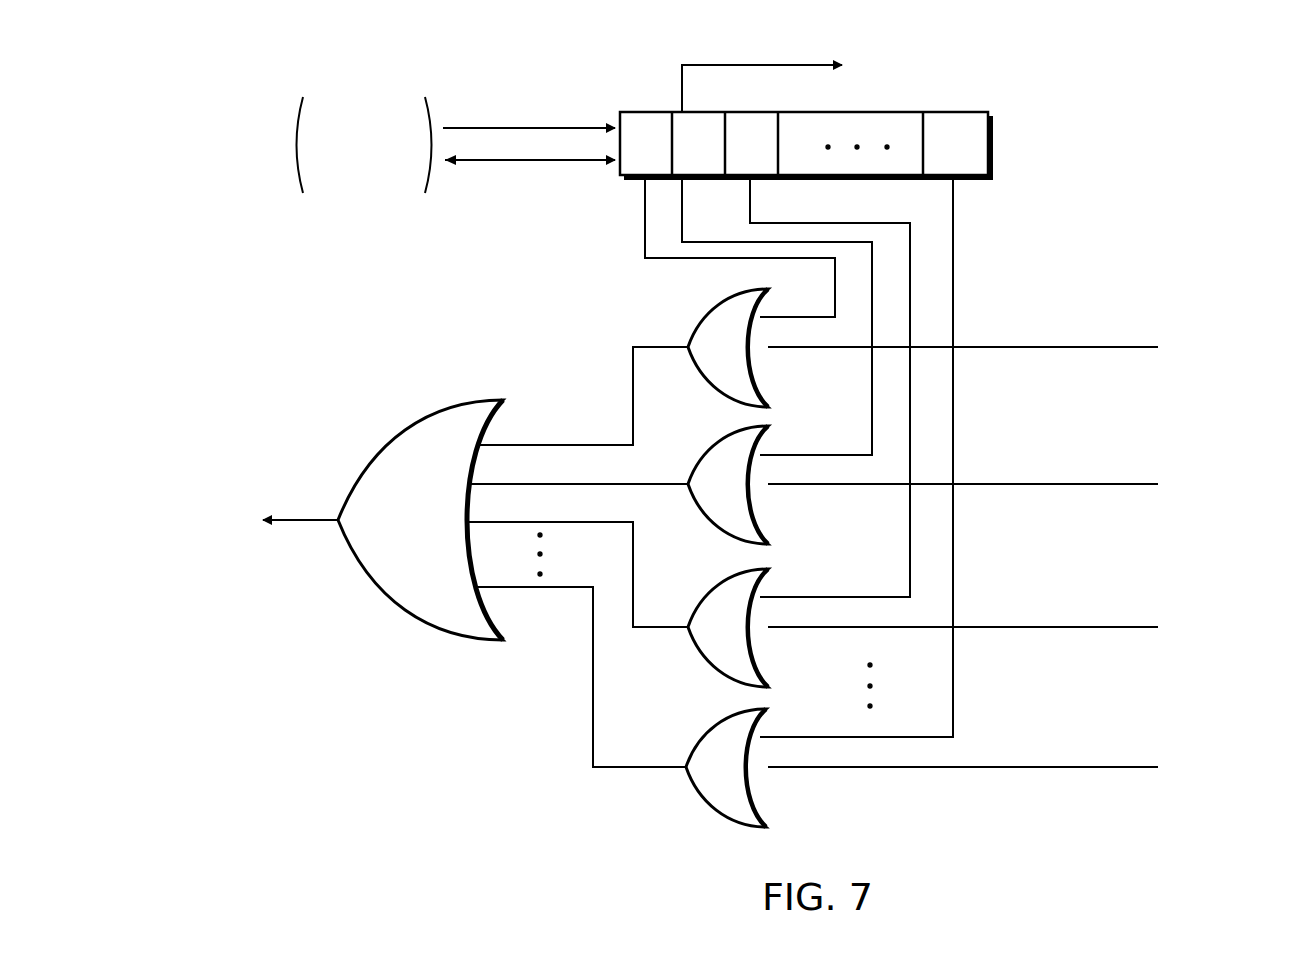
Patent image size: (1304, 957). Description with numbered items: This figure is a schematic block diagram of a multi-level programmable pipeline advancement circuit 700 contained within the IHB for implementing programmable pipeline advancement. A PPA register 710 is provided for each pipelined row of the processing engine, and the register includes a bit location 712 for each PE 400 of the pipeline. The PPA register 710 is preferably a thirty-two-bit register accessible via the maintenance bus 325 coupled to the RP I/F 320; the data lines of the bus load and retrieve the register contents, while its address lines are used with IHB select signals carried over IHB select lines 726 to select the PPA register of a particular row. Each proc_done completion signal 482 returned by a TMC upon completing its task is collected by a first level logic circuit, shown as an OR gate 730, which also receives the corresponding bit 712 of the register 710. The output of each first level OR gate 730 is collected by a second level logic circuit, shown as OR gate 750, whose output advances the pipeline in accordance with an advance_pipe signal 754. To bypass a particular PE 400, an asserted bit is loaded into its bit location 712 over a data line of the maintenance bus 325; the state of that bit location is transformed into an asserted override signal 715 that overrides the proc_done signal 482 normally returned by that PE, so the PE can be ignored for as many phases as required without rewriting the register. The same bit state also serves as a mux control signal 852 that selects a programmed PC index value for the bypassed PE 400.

The programmable pipeline advancement circuit 700 is at (1160, 123).
The PPA register 710 is at (811, 126).
The bit location 712 is at (633, 110).
The override signal 715 is at (645, 238).
The IHB select lines 726 is at (514, 119).
The maintenance bus 325 is at (475, 161).
The RP I/F 320 is at (364, 148).
The mux control signal 852 is at (745, 65).
The PE 400 is at (920, 69).
The proc_done completion signal 482 is at (1034, 543).
The first level OR gate 730 is at (732, 437).
The second level OR gate 750 is at (432, 622).
The advance_pipe signal 754 is at (302, 520).